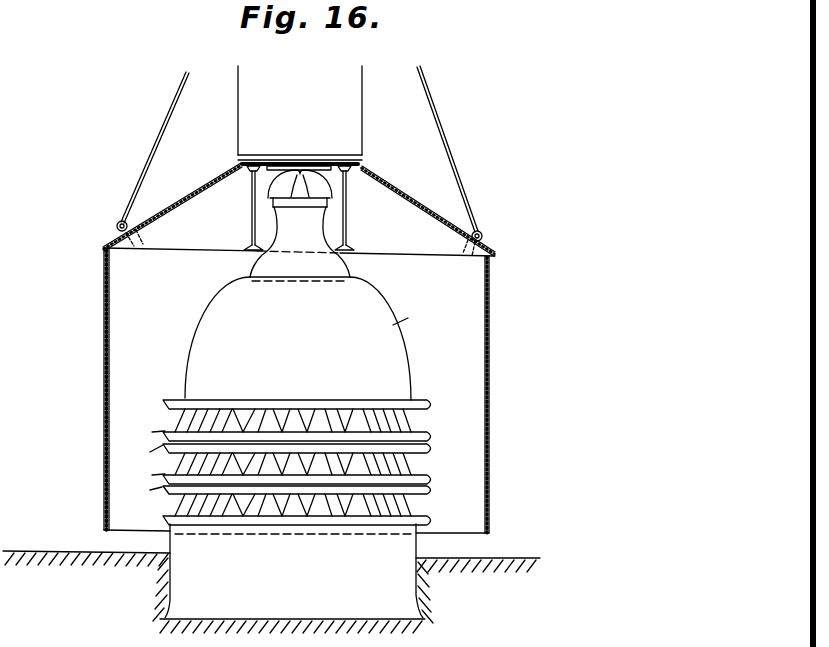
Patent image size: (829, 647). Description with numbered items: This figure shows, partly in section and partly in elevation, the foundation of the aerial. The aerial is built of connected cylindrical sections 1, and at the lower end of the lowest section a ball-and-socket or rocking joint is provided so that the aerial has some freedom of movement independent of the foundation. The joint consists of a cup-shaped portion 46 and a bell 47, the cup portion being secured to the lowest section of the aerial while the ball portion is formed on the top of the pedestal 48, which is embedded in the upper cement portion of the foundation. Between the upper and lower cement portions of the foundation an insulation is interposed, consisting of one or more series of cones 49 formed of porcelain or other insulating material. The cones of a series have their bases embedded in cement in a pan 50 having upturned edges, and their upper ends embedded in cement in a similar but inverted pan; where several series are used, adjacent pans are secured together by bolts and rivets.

The section 1 is at (343, 125).
The cup-shaped portion 46 is at (322, 197).
The bell 47 is at (279, 204).
The pedestal 48 is at (300, 223).
The cones 49 is at (410, 426).
The pan 50 is at (412, 511).